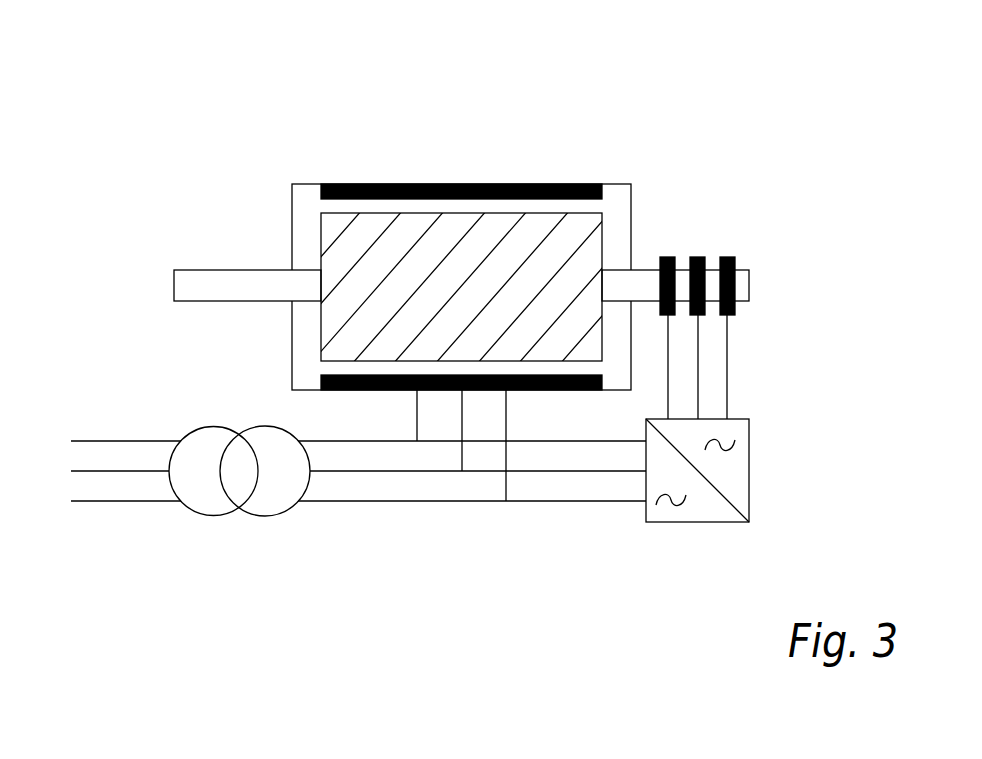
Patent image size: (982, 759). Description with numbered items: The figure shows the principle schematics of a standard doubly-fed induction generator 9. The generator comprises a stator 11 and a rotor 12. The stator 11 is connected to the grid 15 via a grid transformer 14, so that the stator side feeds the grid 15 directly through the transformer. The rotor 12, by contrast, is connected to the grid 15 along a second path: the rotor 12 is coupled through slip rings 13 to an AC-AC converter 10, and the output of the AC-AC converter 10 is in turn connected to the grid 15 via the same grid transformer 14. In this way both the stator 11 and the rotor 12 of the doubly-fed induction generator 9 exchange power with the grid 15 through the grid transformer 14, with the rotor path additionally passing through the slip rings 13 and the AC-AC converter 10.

The doubly-fed induction generator 9 is at (301, 207).
The AC-AC converter 10 is at (738, 477).
The stator 11 is at (451, 184).
The rotor 12 is at (401, 255).
The slip rings 13 is at (672, 257).
The grid transformer 14 is at (264, 516).
The grid 15 is at (145, 473).